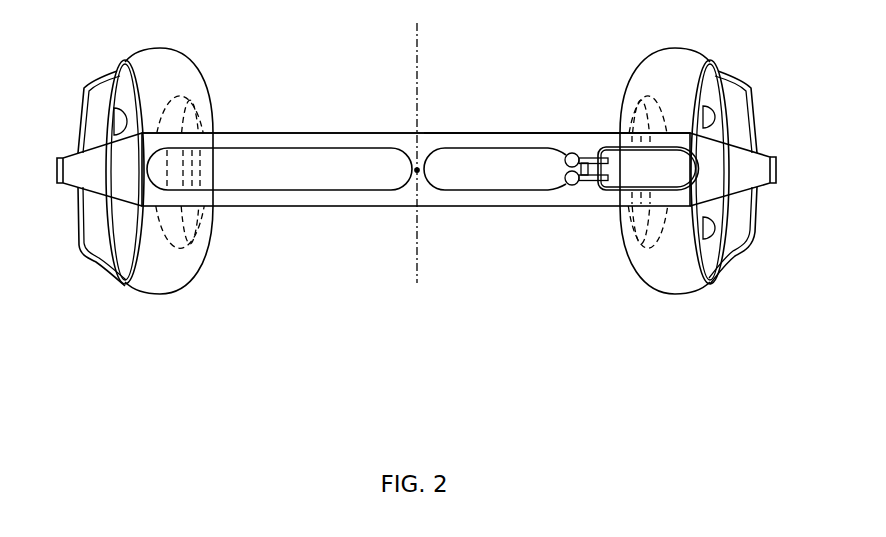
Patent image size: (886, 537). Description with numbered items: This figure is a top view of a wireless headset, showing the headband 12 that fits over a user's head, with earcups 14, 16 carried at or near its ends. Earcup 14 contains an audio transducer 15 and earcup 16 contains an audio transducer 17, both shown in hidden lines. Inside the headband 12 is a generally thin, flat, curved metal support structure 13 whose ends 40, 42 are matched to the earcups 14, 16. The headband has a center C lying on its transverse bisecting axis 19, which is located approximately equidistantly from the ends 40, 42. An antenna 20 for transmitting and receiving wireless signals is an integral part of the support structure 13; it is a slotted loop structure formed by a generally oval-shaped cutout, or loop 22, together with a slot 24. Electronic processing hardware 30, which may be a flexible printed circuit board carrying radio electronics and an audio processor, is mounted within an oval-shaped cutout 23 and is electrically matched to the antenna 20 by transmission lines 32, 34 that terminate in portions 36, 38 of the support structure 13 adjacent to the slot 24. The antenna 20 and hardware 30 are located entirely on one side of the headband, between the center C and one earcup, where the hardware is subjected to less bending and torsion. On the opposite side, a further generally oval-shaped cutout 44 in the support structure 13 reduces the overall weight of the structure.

The headband 12 is at (236, 126).
The metal support structure 13 is at (300, 133).
The earcup 14 is at (168, 294).
The audio transducer 15 is at (200, 240).
The earcup 16 is at (683, 294).
The audio transducer 17 is at (634, 255).
The transverse bisecting axis 19 is at (414, 256).
The antenna 20 is at (476, 125).
The loop 22 is at (480, 193).
The oval-shaped cutout 23 is at (630, 191).
The slot 24 is at (584, 155).
The electronic processing hardware 30 is at (618, 152).
The transmission line 32 is at (563, 154).
The transmission line 34 is at (564, 185).
The portion of metal support structure 36 is at (592, 158).
The portion of metal support structure 38 is at (583, 186).
The end of support structure 40 is at (60, 184).
The end of support structure 42 is at (778, 163).
The oval-shaped cutout 44 is at (287, 193).
The center C is at (414, 175).